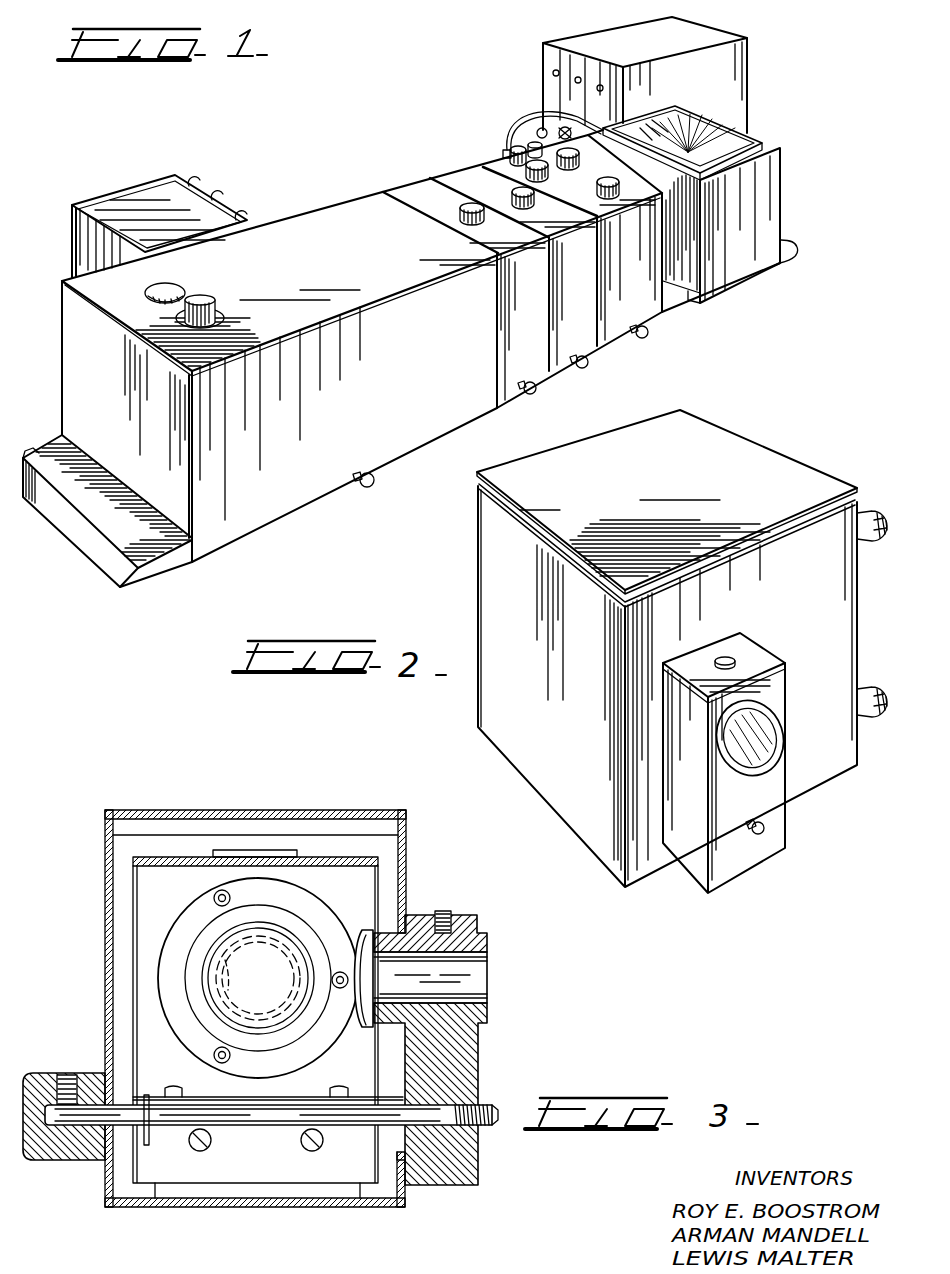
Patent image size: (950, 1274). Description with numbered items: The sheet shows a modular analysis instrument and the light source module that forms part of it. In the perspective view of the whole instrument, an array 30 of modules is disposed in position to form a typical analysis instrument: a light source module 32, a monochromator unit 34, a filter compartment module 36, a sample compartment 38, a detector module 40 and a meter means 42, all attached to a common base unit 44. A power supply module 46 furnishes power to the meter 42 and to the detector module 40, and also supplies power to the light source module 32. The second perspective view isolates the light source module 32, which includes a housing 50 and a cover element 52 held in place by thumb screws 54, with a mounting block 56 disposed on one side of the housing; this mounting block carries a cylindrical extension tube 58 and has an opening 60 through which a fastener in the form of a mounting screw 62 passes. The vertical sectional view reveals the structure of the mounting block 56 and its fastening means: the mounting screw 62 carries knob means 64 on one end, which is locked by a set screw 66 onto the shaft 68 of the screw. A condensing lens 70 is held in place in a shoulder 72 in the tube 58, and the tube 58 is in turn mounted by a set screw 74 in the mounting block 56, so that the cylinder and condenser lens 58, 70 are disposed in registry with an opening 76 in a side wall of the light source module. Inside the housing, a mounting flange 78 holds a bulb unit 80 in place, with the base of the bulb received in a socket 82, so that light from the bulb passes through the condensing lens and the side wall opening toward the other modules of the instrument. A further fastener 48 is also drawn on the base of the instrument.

In FIG. 1, the array of modules 30 is at (320, 105).
In FIG. 1, the light source module 32 is at (116, 178).
In FIG. 2, the light source module 32 is at (466, 685).
In FIG. 1, the monochromator unit 34 is at (292, 212).
In FIG. 1, the filter compartment module 36 is at (398, 186).
In FIG. 1, the sample compartment 38 is at (598, 368).
In FIG. 1, the detector module 40 is at (668, 332).
In FIG. 1, the meter means 42 is at (789, 230).
In FIG. 1, the base unit 44 is at (110, 522).
In FIG. 1, the power supply module 46 is at (720, 36).
In FIG. 1, the fastening bolt 48 is at (374, 486).
In FIG. 2, the housing 50 is at (512, 745).
In FIG. 2, the cover element 52 is at (794, 478).
In FIG. 3, the cover element 52 is at (142, 812).
In FIG. 2, the thumb screws 54 is at (873, 512).
In FIG. 3, the mounting block 56 is at (465, 1070).
In FIG. 2, the cylindrical extension tube 58 is at (778, 758).
In FIG. 3, the cylindrical extension tube 58 is at (478, 945).
In FIG. 2, the opening 60 is at (772, 815).
In FIG. 2, the mounting screw 62 is at (768, 842).
In FIG. 3, the mounting screw 62 is at (492, 1110).
In FIG. 3, the knob means 64 is at (43, 1077).
In FIG. 3, the set screw 66 is at (66, 1077).
In FIG. 3, the shaft 68 is at (250, 1115).
In FIG. 3, the condensing lens 70 is at (358, 1028).
In FIG. 3, the shoulder 72 is at (378, 936).
In FIG. 3, the set screw 74 is at (446, 915).
In FIG. 3, the opening 76 is at (420, 1010).
In FIG. 3, the mounting flange 78 is at (333, 898).
In FIG. 3, the bulb unit 80 is at (222, 950).
In FIG. 3, the socket 82 is at (225, 1005).